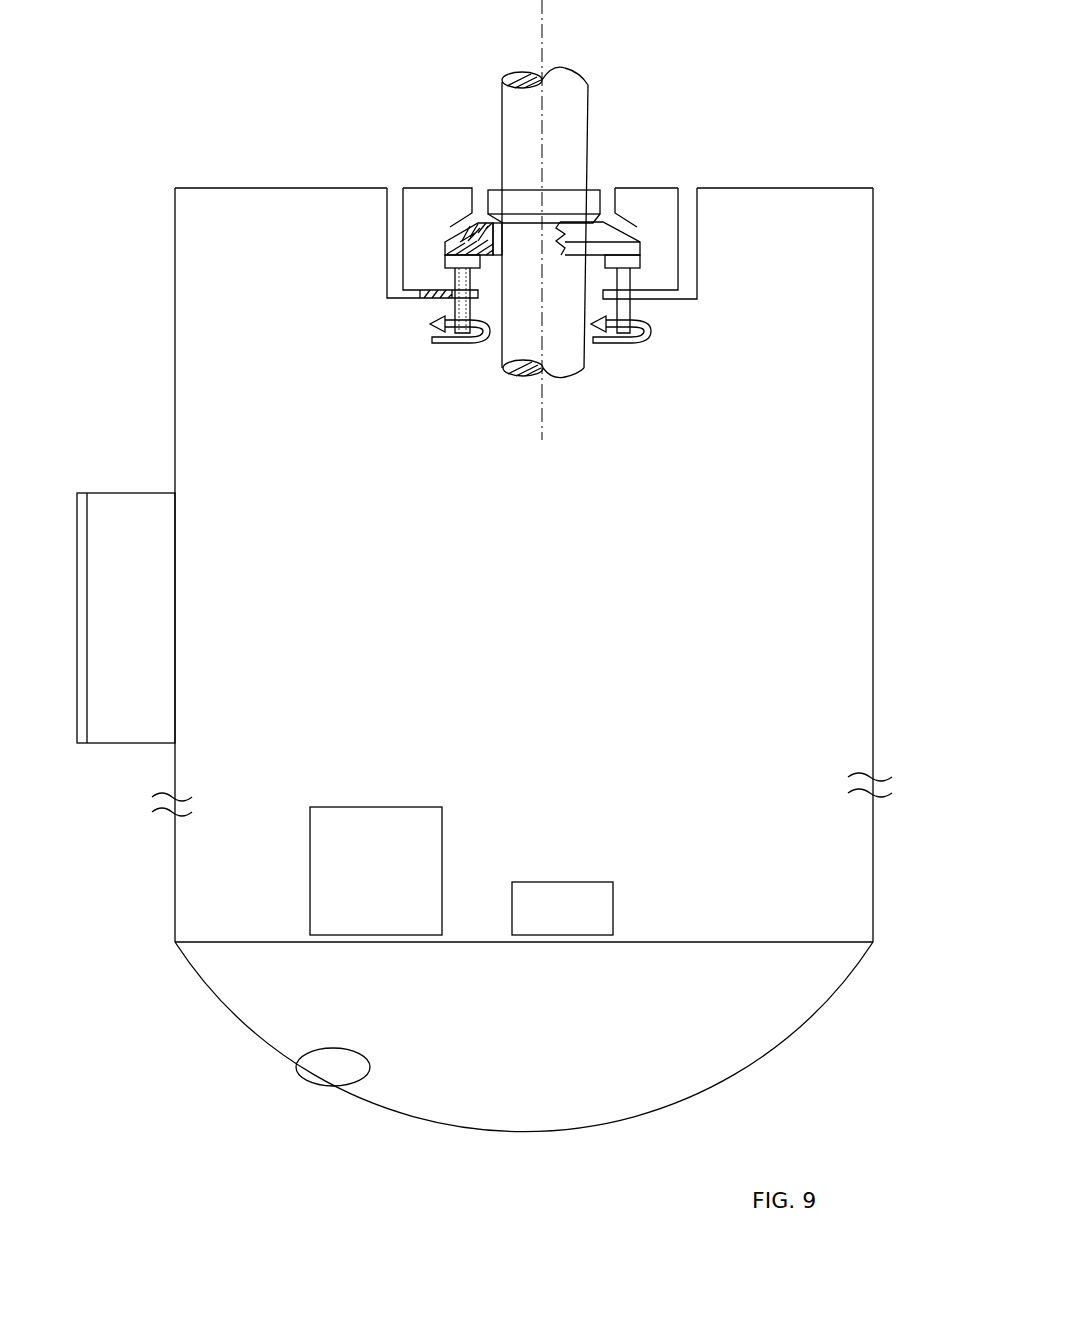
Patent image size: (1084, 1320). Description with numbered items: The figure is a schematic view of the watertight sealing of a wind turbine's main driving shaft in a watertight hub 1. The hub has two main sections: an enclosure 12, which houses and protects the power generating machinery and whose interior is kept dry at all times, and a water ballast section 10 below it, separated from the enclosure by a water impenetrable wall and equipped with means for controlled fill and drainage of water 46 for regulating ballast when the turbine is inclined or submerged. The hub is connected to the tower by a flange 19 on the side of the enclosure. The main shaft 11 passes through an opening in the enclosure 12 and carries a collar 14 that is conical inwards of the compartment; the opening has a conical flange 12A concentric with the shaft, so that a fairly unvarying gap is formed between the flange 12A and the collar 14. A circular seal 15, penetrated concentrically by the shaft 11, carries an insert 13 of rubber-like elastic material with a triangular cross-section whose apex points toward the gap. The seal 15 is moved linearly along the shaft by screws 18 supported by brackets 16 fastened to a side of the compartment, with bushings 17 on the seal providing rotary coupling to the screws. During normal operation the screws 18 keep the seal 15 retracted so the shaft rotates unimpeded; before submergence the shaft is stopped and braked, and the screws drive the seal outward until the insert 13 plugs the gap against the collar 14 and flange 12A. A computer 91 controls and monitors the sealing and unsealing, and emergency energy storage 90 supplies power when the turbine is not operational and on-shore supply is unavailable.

The watertight hub 1 is at (815, 82).
The water ballast section 10 is at (572, 1128).
The main shaft 11 is at (517, 120).
The enclosure 12 is at (868, 557).
The flange 12A is at (625, 213).
The insert 13 is at (473, 228).
The collar 14 is at (562, 198).
The circular seal 15 is at (643, 248).
The brackets 16 is at (386, 257).
The bushings 17 is at (442, 268).
The screws 18 is at (452, 312).
The flange 19 is at (130, 518).
The water 46 is at (315, 1072).
The emergency energy storage 90 is at (335, 805).
The computer 91 is at (573, 897).